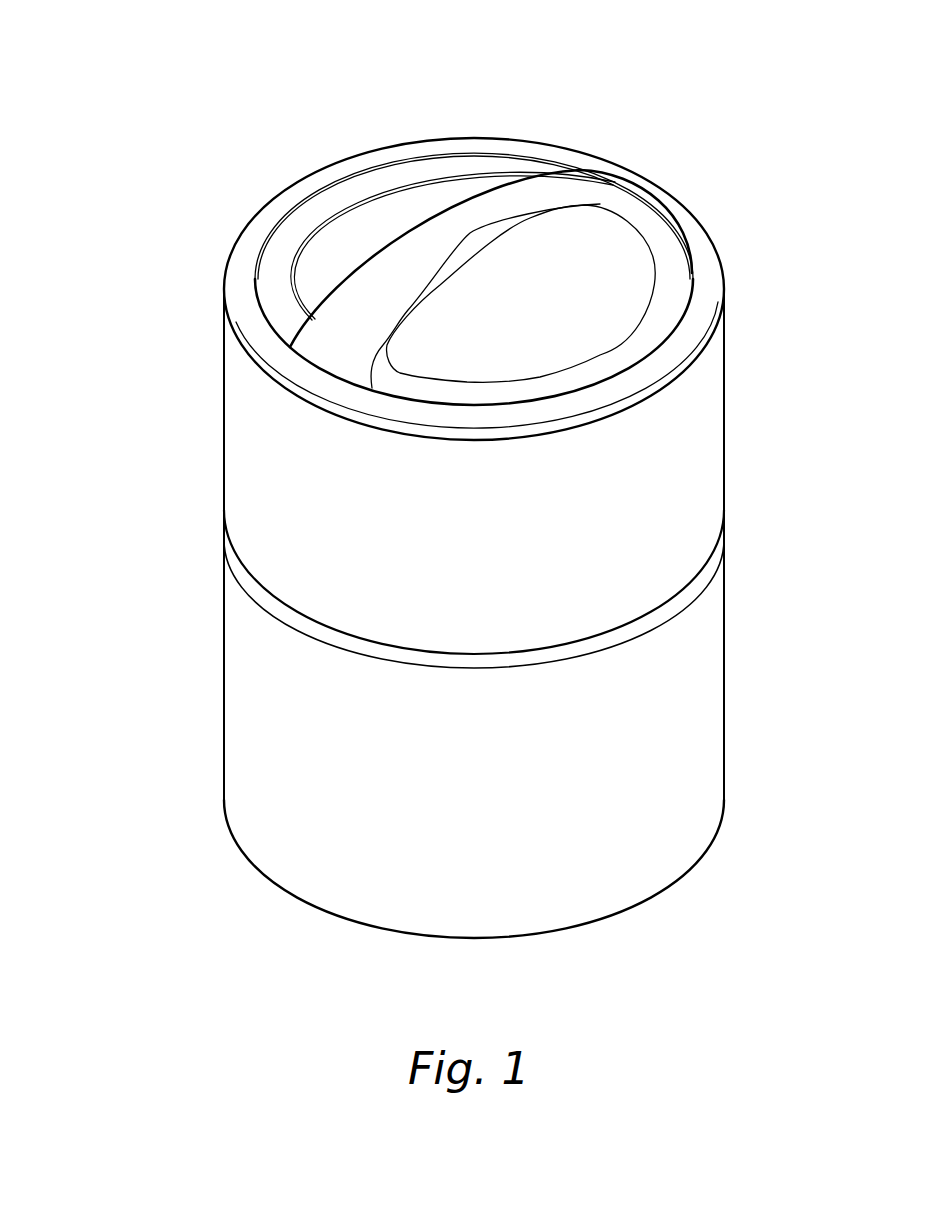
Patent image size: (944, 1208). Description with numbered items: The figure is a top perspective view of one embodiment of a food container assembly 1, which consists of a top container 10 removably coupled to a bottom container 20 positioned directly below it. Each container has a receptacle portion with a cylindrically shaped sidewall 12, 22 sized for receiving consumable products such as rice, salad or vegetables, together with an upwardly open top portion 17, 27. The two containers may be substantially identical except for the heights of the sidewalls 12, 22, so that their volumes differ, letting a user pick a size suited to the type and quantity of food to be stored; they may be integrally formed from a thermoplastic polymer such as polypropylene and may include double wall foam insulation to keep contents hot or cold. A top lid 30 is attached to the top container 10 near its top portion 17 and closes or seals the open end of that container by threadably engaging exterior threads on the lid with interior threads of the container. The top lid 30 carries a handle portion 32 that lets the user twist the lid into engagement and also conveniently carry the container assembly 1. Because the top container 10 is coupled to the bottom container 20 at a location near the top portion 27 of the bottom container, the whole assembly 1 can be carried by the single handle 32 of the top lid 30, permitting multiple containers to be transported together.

The food container assembly 1 is at (140, 56).
The top container 10 is at (150, 427).
The sidewall 12 is at (690, 448).
The top portion 17 is at (243, 256).
The bottom container 20 is at (150, 699).
The sidewall 22 is at (690, 698).
The top portion 27 is at (285, 612).
The top lid 30 is at (600, 283).
The handle portion 32 is at (462, 232).